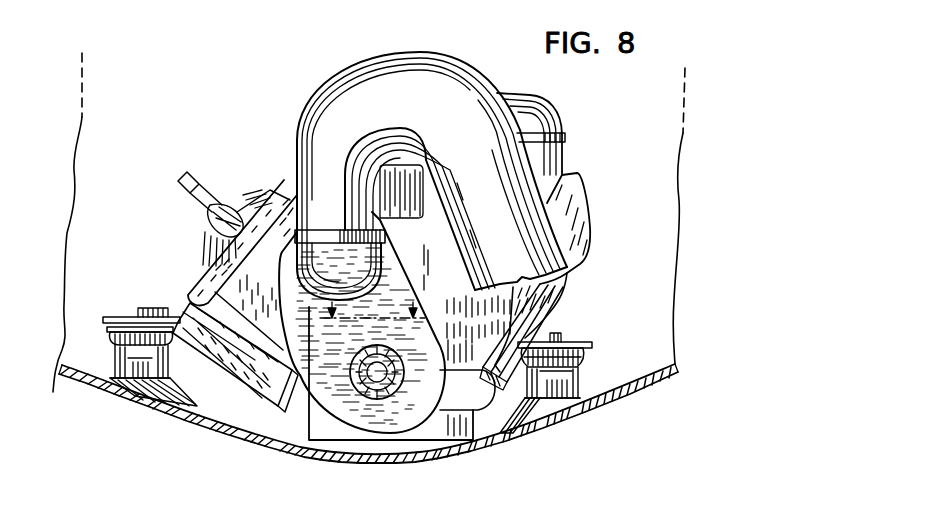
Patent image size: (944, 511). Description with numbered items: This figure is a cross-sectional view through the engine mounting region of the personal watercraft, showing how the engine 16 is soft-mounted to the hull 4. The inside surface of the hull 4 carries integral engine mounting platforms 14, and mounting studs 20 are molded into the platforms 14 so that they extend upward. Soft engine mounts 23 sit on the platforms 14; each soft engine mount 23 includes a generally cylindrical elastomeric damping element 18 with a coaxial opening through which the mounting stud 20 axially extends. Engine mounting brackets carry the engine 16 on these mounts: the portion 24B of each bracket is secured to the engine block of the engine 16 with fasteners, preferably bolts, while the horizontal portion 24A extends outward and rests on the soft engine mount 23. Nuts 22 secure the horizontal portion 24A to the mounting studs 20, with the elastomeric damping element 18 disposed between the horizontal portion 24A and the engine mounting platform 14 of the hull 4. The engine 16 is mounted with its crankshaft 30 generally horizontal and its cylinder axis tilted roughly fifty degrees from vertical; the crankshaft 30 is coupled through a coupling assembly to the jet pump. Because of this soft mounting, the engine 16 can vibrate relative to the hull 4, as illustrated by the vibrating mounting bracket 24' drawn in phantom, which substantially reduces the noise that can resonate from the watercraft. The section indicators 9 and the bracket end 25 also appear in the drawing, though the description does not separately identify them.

The hull 4 is at (368, 456).
The section line 9 is at (371, 327).
The engine mounting platform 14 is at (177, 414).
The engine 16 is at (293, 187).
The elastomeric damping element 18 is at (138, 385).
The mounting stud 20 is at (525, 334).
The nut 22 is at (545, 330).
The soft engine mount 23 is at (124, 297).
The vibrating mounting bracket 24' is at (100, 291).
The horizontal portion of the engine mounting bracket 24A is at (107, 330).
The portion of the engine mounting bracket secured to the engine block 24B is at (233, 385).
The bracket end 25 is at (261, 402).
The crankshaft 30 is at (395, 366).